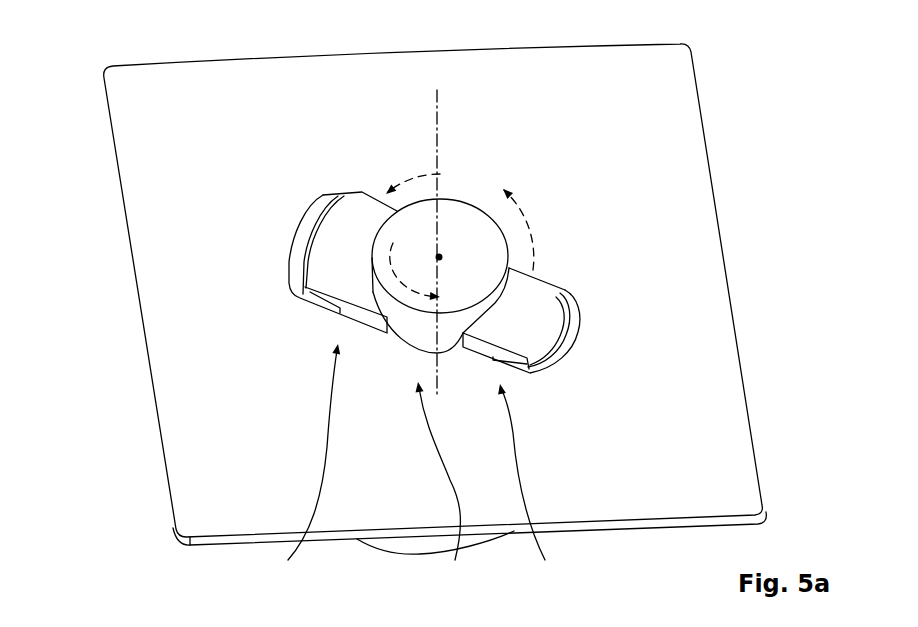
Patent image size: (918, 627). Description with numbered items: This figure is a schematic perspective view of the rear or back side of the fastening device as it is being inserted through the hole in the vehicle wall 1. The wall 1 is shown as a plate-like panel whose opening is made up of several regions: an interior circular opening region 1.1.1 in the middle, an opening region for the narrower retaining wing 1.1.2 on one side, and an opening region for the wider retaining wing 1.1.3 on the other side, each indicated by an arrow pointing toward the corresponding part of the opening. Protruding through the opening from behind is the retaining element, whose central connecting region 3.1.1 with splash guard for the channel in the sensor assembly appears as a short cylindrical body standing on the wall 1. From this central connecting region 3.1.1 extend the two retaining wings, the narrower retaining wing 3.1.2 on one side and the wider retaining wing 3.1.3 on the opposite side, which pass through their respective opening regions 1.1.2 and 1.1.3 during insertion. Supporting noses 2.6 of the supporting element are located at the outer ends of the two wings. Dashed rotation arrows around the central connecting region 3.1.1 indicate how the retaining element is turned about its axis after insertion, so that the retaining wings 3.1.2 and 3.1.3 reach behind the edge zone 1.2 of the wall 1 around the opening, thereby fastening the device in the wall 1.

The wall 1 is at (240, 78).
The edge zone of the wall around the opening 1.2 is at (391, 370).
The interior circular opening region 1.1.1 is at (445, 484).
The opening region for the narrower retaining wing 1.1.2 is at (536, 485).
The opening region for the wider retaining wing 1.1.3 is at (295, 465).
The supporting noses on the supporting element 2.6 is at (330, 193).
The central connecting region with splash guard for channel in the sensor assembly 3.1.1 is at (445, 220).
The narrower retaining wing 3.1.2 is at (537, 325).
The wider retaining wing 3.1.3 is at (330, 263).